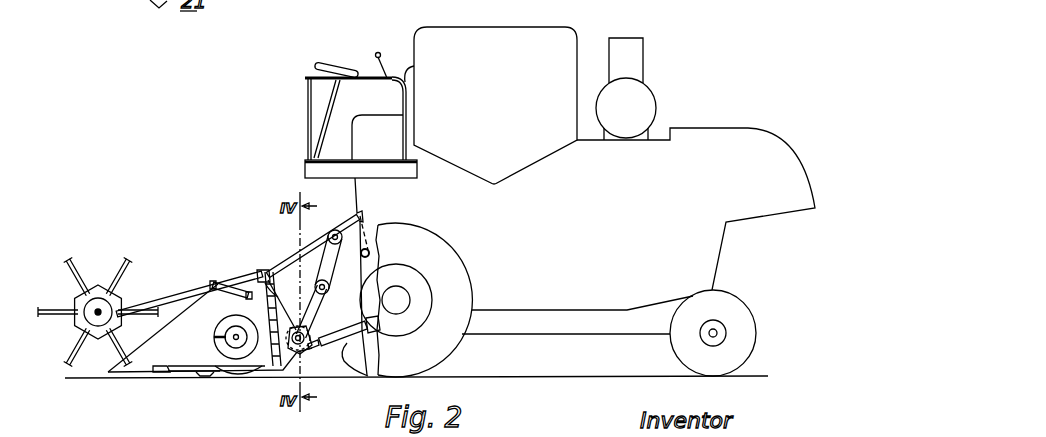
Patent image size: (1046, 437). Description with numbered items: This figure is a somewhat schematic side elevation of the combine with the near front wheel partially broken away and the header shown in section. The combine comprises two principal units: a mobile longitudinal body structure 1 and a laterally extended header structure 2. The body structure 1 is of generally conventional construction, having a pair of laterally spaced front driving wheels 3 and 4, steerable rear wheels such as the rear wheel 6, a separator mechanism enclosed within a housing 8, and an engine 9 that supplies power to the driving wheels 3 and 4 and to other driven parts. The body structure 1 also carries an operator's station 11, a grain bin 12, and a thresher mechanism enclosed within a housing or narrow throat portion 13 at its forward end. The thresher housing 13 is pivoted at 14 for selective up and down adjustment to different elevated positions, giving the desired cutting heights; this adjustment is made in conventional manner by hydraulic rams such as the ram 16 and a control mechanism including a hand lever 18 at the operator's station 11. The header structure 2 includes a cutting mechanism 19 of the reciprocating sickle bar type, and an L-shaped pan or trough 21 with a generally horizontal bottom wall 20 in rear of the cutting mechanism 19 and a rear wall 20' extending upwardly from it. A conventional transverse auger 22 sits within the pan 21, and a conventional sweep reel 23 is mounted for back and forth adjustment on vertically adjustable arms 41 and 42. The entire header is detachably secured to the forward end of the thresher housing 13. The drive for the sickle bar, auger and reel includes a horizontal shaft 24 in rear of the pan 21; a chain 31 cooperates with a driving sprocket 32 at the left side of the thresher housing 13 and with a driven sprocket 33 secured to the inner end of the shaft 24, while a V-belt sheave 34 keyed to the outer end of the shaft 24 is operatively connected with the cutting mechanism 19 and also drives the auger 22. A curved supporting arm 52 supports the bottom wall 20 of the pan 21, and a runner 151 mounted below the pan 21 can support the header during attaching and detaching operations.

The body structure 1 is at (494, 27).
The header structure 2 is at (148, 367).
The front driving wheel 3 is at (458, 262).
The front driving wheel 4 is at (345, 344).
The rear wheel 6 is at (755, 322).
The housing 8 is at (727, 132).
The engine 9 is at (640, 64).
The operator's station 11 is at (304, 176).
The grain bin 12 is at (575, 30).
The thresher housing 13 is at (288, 258).
The pivot 14 is at (370, 253).
The hydraulic ram 16 is at (343, 329).
The hand lever 18 is at (382, 56).
The cutting mechanism 19 is at (168, 375).
The bottom wall 20 is at (207, 353).
The rear wall 20' is at (234, 276).
The pan 21 is at (204, 368).
The auger 22 is at (214, 323).
The sweep reel 23 is at (126, 259).
The shaft 24 is at (306, 326).
The chain 31 is at (285, 303).
The driving sprocket 32 is at (324, 284).
The driven sprocket 33 is at (305, 347).
The V-belt sheave 34 is at (307, 10).
The vertically adjustable arm 41 is at (180, 294).
The vertically adjustable arm 42 is at (226, 7).
The curved supporting arm 52 is at (244, 377).
The runner 151 is at (204, 377).